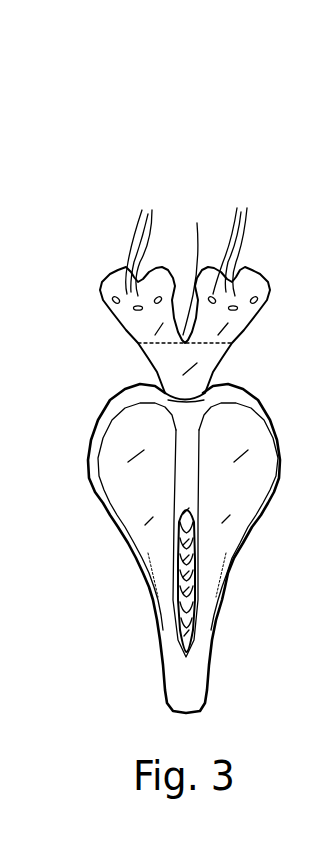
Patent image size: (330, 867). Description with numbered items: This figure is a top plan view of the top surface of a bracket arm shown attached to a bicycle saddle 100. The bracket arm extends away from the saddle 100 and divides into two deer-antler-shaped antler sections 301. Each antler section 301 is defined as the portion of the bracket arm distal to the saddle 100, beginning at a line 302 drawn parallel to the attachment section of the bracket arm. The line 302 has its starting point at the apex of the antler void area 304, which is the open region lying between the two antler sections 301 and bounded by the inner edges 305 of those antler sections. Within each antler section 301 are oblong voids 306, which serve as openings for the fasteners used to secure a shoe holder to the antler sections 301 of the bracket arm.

The saddle 100 is at (255, 497).
The antler section 301 is at (88, 262).
The line 302 is at (215, 343).
The antler void area 304 is at (193, 268).
The inner edges of antler sections 305 is at (236, 241).
The oblong voids 306 is at (143, 241).